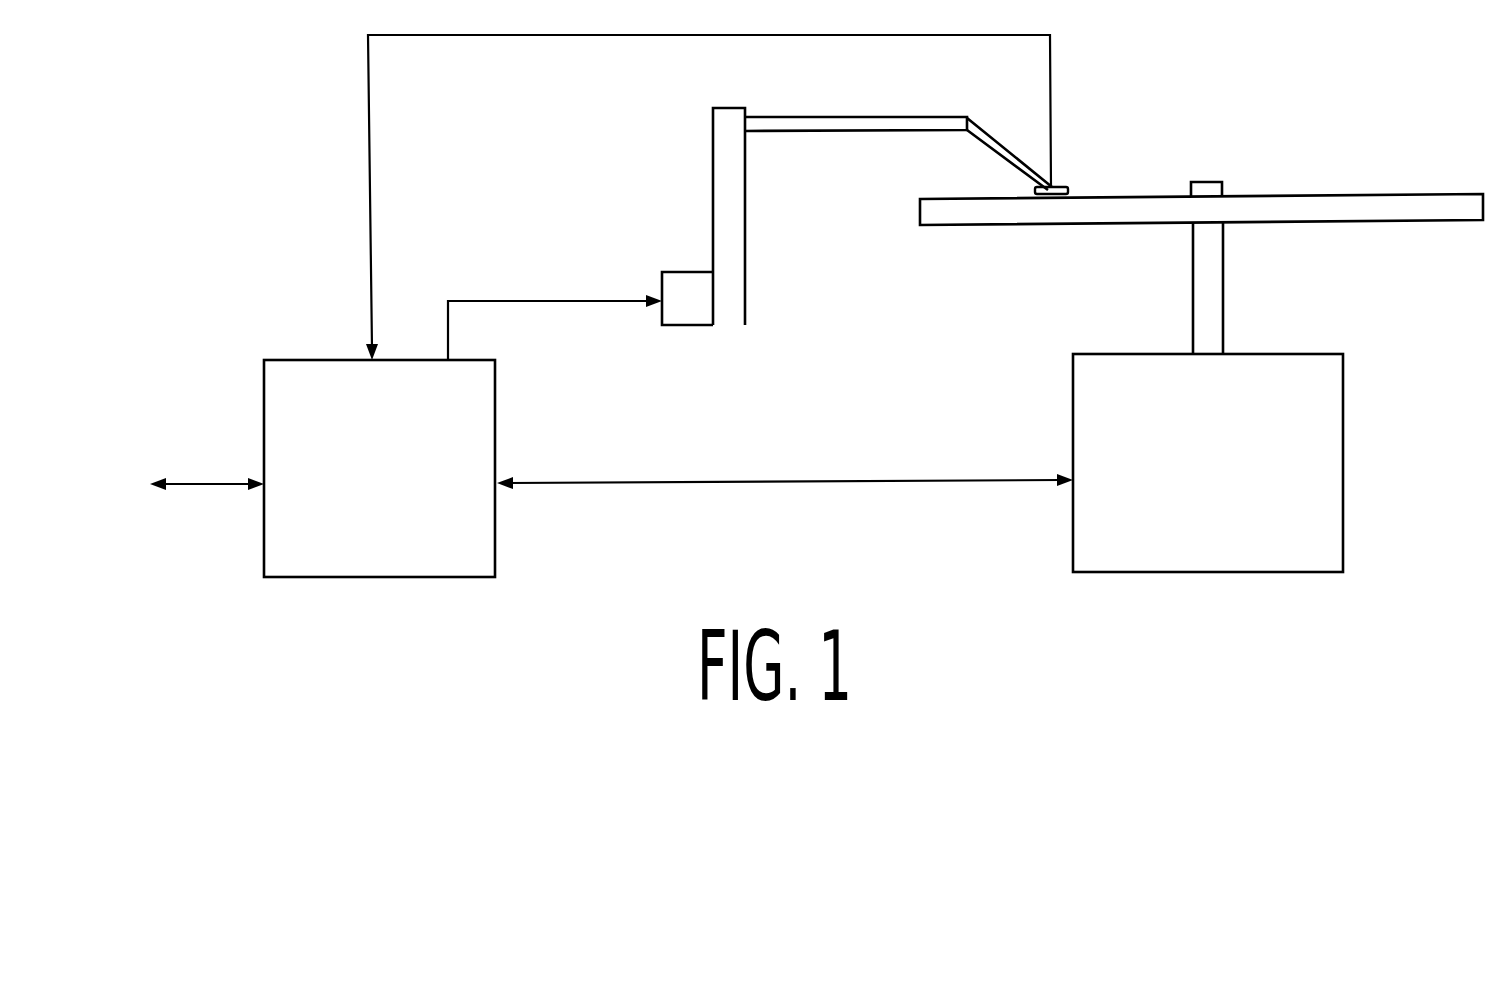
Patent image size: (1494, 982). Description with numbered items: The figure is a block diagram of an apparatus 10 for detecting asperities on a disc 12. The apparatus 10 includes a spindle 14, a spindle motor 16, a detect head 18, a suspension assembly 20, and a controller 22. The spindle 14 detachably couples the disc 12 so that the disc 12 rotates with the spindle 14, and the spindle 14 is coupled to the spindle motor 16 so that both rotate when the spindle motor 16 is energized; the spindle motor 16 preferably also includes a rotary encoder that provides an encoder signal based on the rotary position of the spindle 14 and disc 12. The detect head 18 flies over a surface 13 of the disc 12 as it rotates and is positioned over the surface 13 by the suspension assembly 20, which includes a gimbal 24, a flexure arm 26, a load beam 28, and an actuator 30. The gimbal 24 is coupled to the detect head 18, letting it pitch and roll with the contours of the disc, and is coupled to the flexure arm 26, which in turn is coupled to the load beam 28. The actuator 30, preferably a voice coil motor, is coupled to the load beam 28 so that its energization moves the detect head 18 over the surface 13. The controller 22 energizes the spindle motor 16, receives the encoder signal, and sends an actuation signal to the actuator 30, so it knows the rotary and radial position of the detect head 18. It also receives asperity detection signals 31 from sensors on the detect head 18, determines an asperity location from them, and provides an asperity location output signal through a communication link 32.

The apparatus 10 is at (1172, 88).
The disc 12 is at (1311, 184).
The surface 13 is at (1399, 194).
The spindle 14 is at (1223, 270).
The spindle motor 16 is at (1343, 410).
The detect head 18 is at (1067, 189).
The suspension assembly 20 is at (848, 108).
The controller 22 is at (497, 537).
The gimbal 24 is at (1036, 184).
The flexure arm 26 is at (990, 130).
The load beam 28 is at (779, 134).
The actuator 30 is at (685, 325).
The asperity detection signals 31 is at (507, 36).
The communication link 32 is at (206, 488).